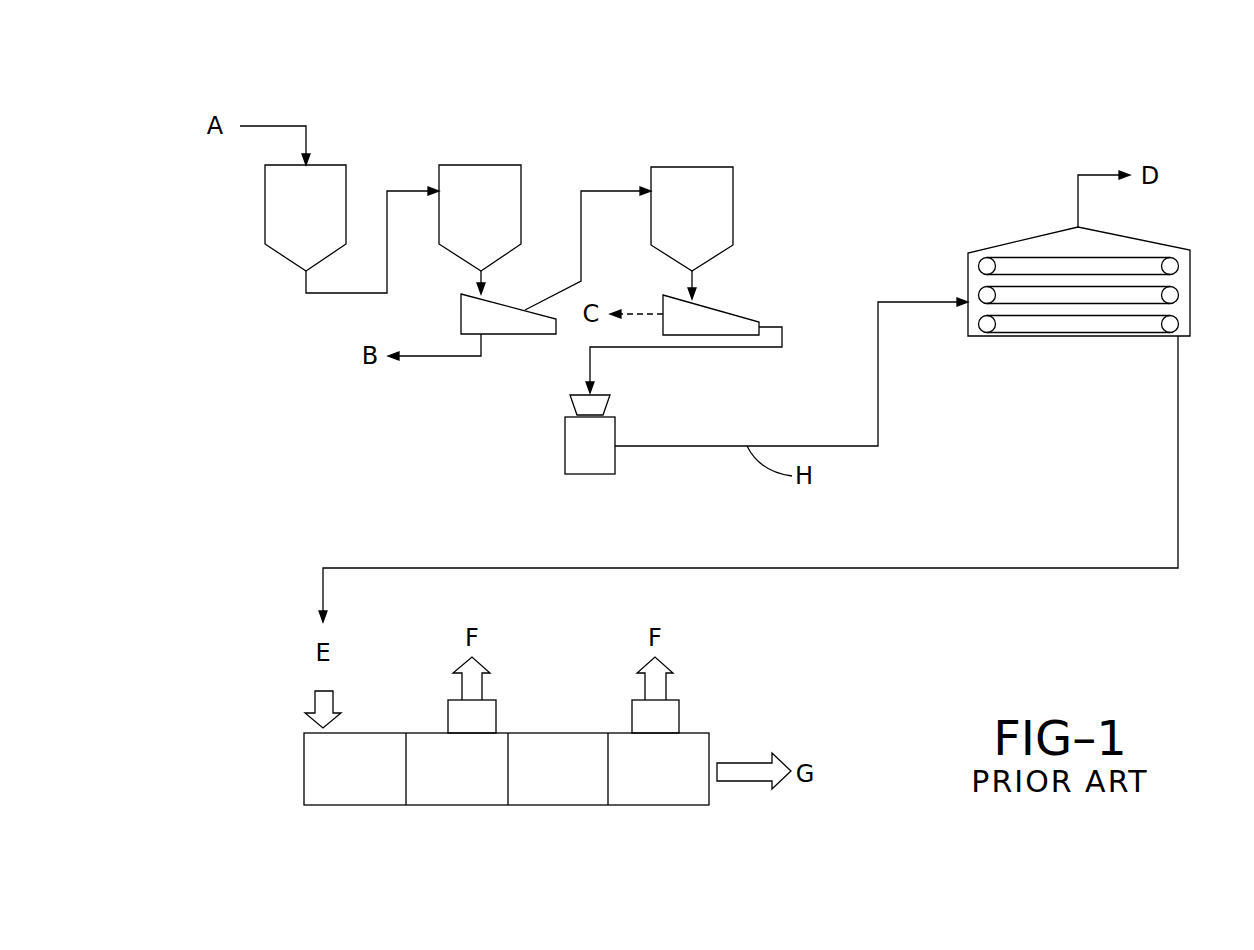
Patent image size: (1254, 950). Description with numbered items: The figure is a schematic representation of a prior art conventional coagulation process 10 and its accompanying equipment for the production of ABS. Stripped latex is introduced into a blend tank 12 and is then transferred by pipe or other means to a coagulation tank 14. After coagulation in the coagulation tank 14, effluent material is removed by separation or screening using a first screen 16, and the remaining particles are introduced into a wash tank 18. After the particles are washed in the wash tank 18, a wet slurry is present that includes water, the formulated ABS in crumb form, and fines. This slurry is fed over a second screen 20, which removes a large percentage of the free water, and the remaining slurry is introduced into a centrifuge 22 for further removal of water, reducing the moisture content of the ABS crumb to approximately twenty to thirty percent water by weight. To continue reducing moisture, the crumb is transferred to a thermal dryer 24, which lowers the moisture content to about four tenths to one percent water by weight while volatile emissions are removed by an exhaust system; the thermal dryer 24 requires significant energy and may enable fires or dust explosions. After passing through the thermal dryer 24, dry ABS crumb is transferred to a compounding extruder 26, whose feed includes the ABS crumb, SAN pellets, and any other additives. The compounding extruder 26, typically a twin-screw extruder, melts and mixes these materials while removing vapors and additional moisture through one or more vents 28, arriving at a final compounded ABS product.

The conventional coagulation process 10 is at (874, 123).
The blend tank 12 is at (331, 164).
The coagulation tank 14 is at (522, 186).
The first screen 16 is at (521, 335).
The wash tank 18 is at (734, 188).
The second screen 20 is at (722, 308).
The centrifuge 22 is at (615, 426).
The thermal dryer 24 is at (1020, 243).
The compounding extruder 26 is at (428, 811).
The vents 28 is at (497, 715).